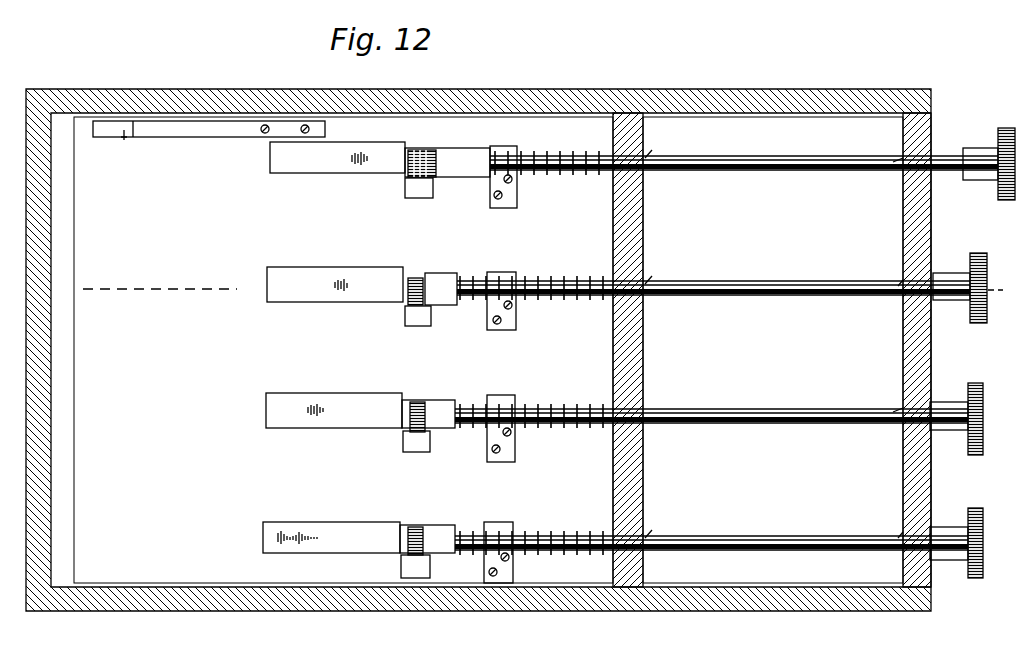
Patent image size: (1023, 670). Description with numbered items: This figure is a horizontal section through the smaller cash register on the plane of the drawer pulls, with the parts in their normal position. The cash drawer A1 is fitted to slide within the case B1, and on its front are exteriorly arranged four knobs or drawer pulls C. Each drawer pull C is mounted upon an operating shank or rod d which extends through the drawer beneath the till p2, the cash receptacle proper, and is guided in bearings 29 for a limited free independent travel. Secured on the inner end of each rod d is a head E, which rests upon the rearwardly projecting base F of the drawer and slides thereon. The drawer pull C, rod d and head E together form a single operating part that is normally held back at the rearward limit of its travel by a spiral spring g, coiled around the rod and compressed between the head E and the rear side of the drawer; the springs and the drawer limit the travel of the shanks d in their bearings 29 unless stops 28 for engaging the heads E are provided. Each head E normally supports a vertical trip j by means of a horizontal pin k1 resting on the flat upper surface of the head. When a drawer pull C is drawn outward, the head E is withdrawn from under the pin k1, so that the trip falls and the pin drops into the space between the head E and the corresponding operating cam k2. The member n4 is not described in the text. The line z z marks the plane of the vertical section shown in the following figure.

The case B1 is at (558, 97).
The cash drawer A1 is at (934, 350).
The base of the drawer F is at (343, 350).
The till p2 is at (773, 350).
The bar n4 is at (209, 139).
The section line z z is at (549, 290).
The operating cam k2 is at (334, 347).
The horizontal pin k1 is at (408, 150).
The head E is at (445, 350).
The trip j is at (405, 187).
The spiral spring g is at (535, 364).
The stops 28 is at (517, 192).
The bearings 29 is at (900, 536).
The operating shank d is at (709, 346).
The drawer pull C is at (985, 149).